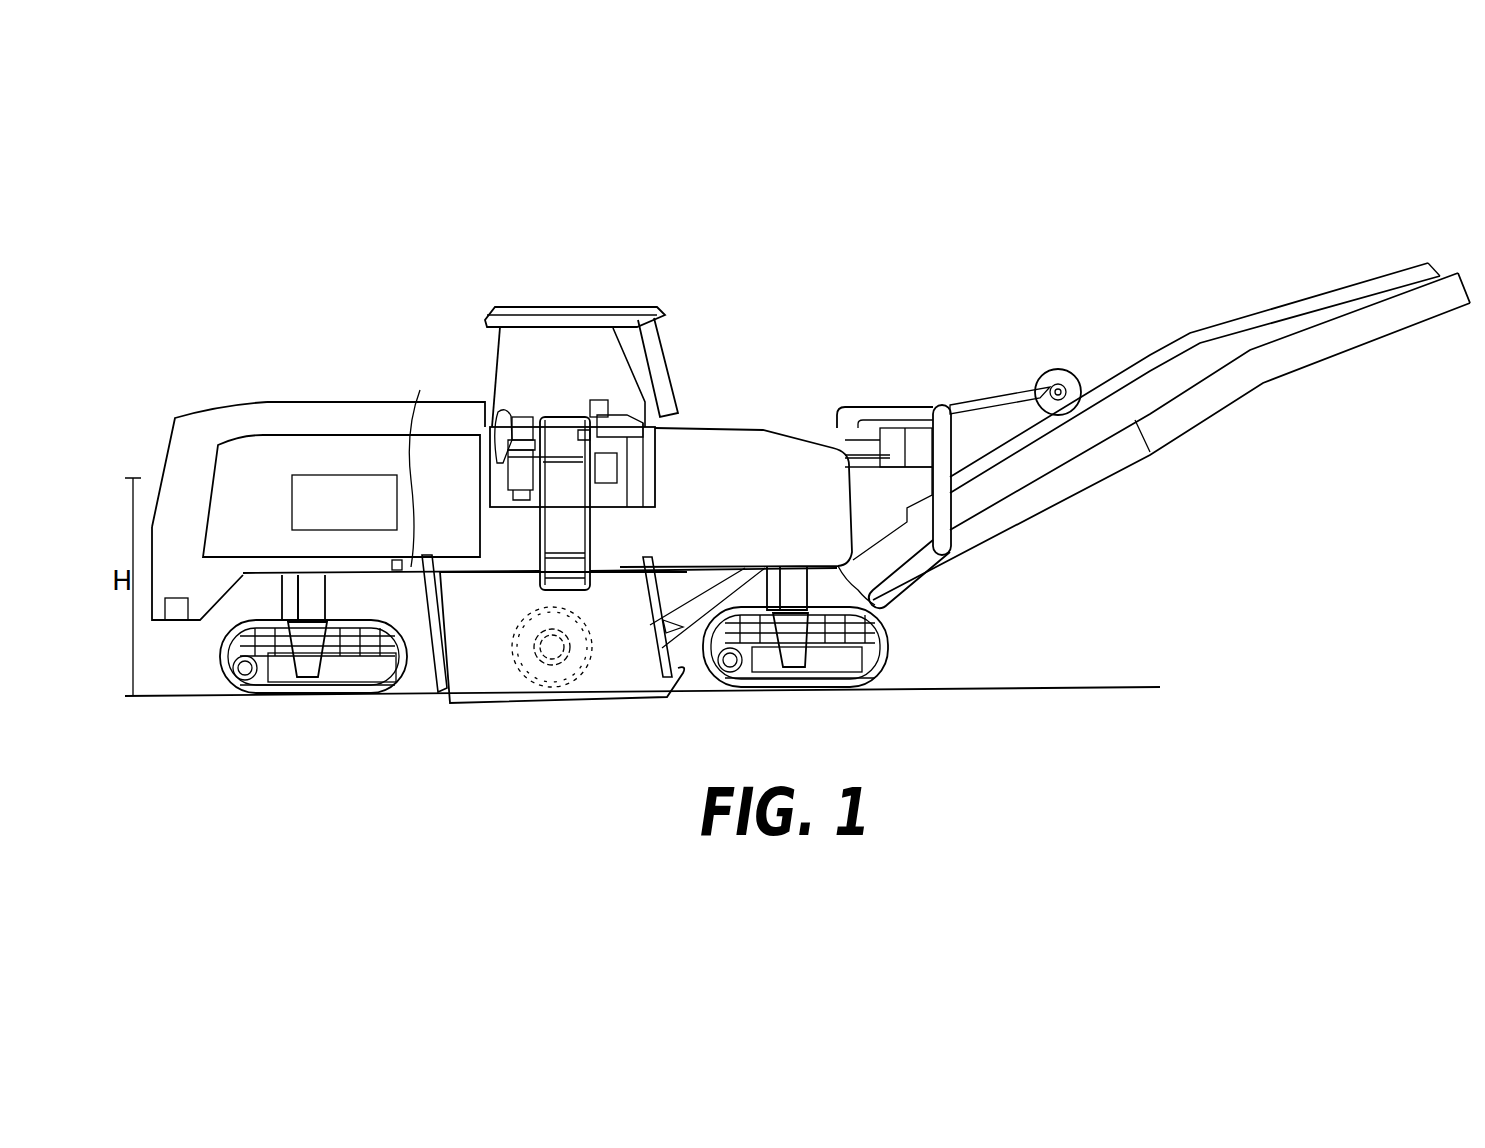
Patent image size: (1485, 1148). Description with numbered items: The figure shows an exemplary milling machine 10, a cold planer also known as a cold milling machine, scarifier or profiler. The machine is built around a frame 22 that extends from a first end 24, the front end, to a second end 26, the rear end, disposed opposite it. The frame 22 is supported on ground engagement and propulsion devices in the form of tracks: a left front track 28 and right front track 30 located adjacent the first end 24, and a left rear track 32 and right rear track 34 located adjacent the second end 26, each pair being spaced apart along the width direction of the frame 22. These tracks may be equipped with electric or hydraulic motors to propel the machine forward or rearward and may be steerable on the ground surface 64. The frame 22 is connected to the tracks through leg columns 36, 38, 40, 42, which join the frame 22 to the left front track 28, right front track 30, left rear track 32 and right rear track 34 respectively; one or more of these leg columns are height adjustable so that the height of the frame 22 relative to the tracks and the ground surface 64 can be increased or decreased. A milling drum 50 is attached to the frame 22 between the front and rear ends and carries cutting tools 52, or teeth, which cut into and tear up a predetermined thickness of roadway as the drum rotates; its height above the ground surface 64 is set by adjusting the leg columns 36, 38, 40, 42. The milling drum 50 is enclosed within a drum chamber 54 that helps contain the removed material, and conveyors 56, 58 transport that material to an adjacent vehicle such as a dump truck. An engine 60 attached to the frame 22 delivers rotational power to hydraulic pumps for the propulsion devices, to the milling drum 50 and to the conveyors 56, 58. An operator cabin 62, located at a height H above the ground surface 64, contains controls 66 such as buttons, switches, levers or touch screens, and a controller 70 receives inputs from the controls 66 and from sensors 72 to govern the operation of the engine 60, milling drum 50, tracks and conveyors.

The milling machine 10 is at (682, 224).
The frame 22 is at (243, 563).
The first end 24 is at (955, 582).
The second end 26 is at (153, 460).
The left front track 28 is at (880, 637).
The right front track 30 is at (885, 668).
The left rear track 32 is at (222, 636).
The right rear track 34 is at (210, 688).
The leg column 36 is at (758, 587).
The leg column 38 is at (803, 593).
The leg column 40 is at (285, 600).
The leg column 42 is at (318, 607).
The milling drum 50 is at (552, 675).
The cutting tools 52 is at (585, 622).
The drum chamber 54 is at (463, 683).
The conveyor 56 is at (690, 575).
The conveyor 58 is at (1162, 428).
The engine 60 is at (344, 502).
The operator cabin 62 is at (486, 373).
The ground surface 64 is at (145, 697).
The controls 66 is at (615, 398).
The controller 70 is at (617, 475).
The sensors 72 is at (165, 606).